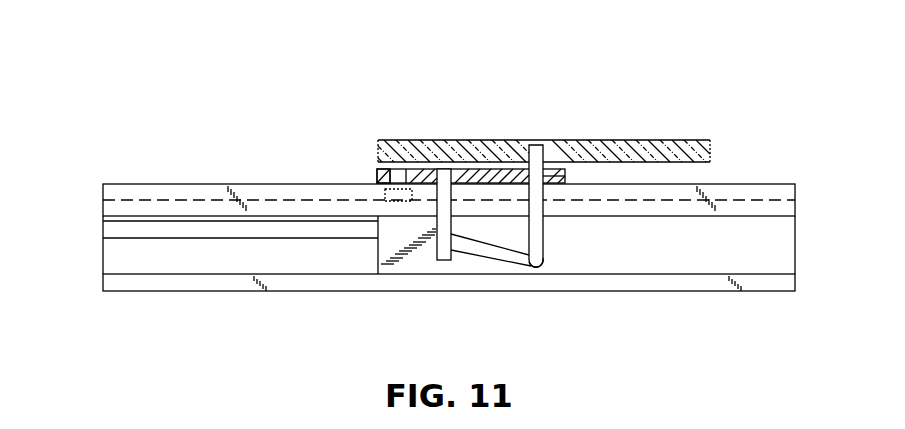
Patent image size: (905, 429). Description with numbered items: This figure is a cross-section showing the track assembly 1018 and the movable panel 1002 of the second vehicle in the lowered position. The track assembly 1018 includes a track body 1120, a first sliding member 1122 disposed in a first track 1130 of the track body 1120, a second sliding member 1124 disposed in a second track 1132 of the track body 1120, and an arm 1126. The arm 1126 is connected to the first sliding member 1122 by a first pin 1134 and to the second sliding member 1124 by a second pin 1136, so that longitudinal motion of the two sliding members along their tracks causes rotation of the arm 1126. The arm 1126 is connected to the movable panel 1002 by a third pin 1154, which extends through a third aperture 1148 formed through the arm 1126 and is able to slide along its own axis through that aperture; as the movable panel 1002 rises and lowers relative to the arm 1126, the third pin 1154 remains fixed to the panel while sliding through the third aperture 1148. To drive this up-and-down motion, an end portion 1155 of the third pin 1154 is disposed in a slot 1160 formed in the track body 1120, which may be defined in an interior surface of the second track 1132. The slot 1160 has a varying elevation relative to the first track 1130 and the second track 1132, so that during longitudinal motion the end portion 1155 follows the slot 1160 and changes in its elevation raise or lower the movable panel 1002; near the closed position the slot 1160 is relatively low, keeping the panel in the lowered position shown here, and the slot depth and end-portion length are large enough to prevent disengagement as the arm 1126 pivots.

The track assembly 1018 is at (171, 134).
The first track 1130 is at (182, 200).
The second track 1132 is at (103, 251).
The slot 1160 is at (178, 239).
The track body 1120 is at (178, 291).
The second sliding member 1124 is at (377, 256).
The third aperture 1148 is at (565, 176).
The first pin 1134 is at (378, 172).
The first sliding member 1122 is at (385, 192).
The movable panel 1002 is at (680, 140).
The third pin 1154 is at (544, 237).
The end portion 1155 is at (541, 262).
The second pin 1136 is at (444, 168).
The arm 1126 is at (482, 169).